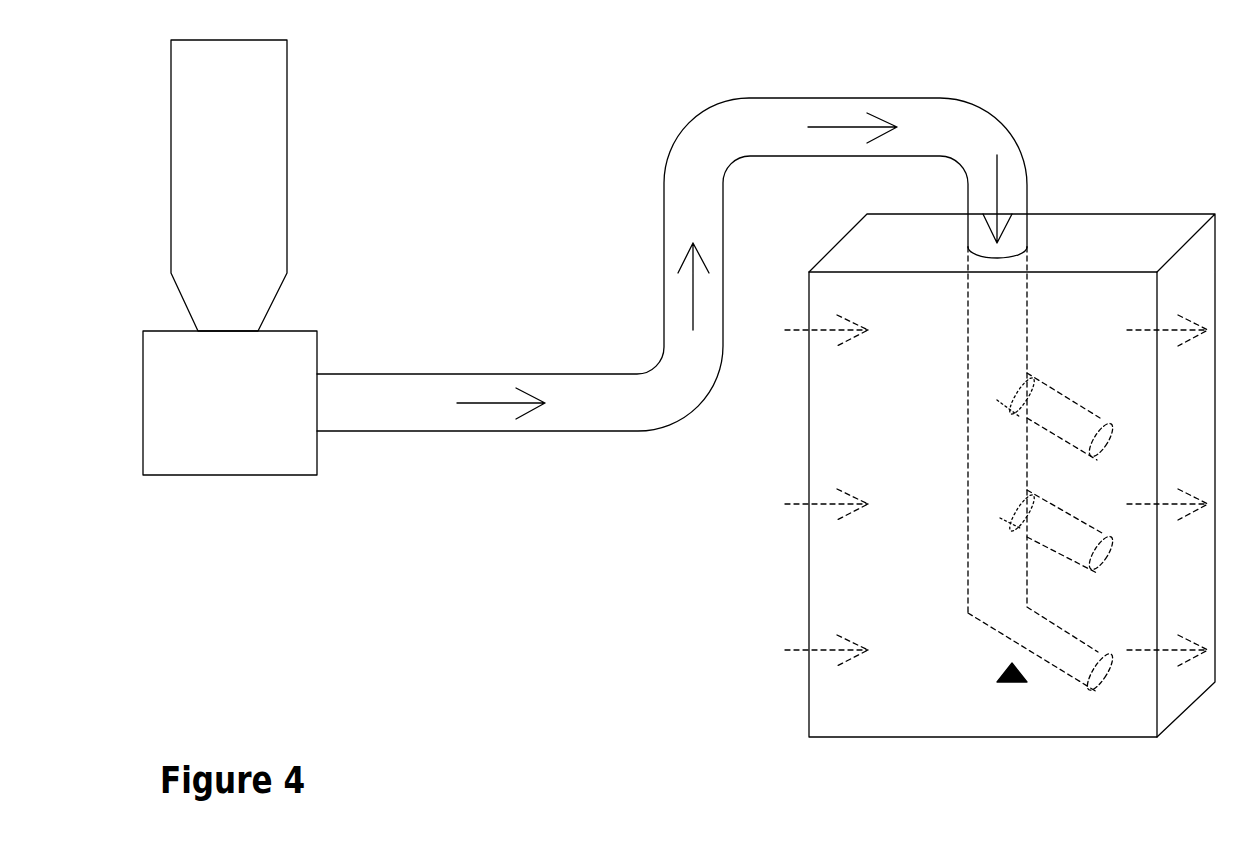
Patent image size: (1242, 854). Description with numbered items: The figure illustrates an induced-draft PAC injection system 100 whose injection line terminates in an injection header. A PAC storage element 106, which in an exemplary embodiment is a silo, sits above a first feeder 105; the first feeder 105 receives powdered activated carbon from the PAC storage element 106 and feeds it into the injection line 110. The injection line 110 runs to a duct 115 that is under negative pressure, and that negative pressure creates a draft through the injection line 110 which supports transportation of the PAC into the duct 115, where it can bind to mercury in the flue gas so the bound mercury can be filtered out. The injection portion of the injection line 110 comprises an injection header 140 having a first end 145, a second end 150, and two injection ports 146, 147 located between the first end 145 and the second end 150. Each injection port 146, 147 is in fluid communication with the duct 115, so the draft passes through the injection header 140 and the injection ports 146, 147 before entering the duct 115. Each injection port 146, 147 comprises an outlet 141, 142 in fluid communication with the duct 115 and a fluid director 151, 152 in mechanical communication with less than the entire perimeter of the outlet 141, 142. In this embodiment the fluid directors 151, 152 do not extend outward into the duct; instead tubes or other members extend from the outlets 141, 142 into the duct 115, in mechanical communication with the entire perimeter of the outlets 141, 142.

The induced-draft PAC injection system 100 is at (707, 49).
The first feeder 105 is at (258, 447).
The PAC storage element 106 is at (258, 155).
The injection line 110 is at (664, 302).
The duct 115 is at (867, 562).
The injection header 140 is at (1012, 682).
The outlet 141 is at (1025, 397).
The outlet 142 is at (1027, 515).
The first end 145 is at (968, 323).
The injection port 146 is at (1076, 402).
The injection port 147 is at (1063, 513).
The second end 150 is at (968, 583).
The fluid director 151 is at (1013, 410).
The fluid director 152 is at (1012, 527).